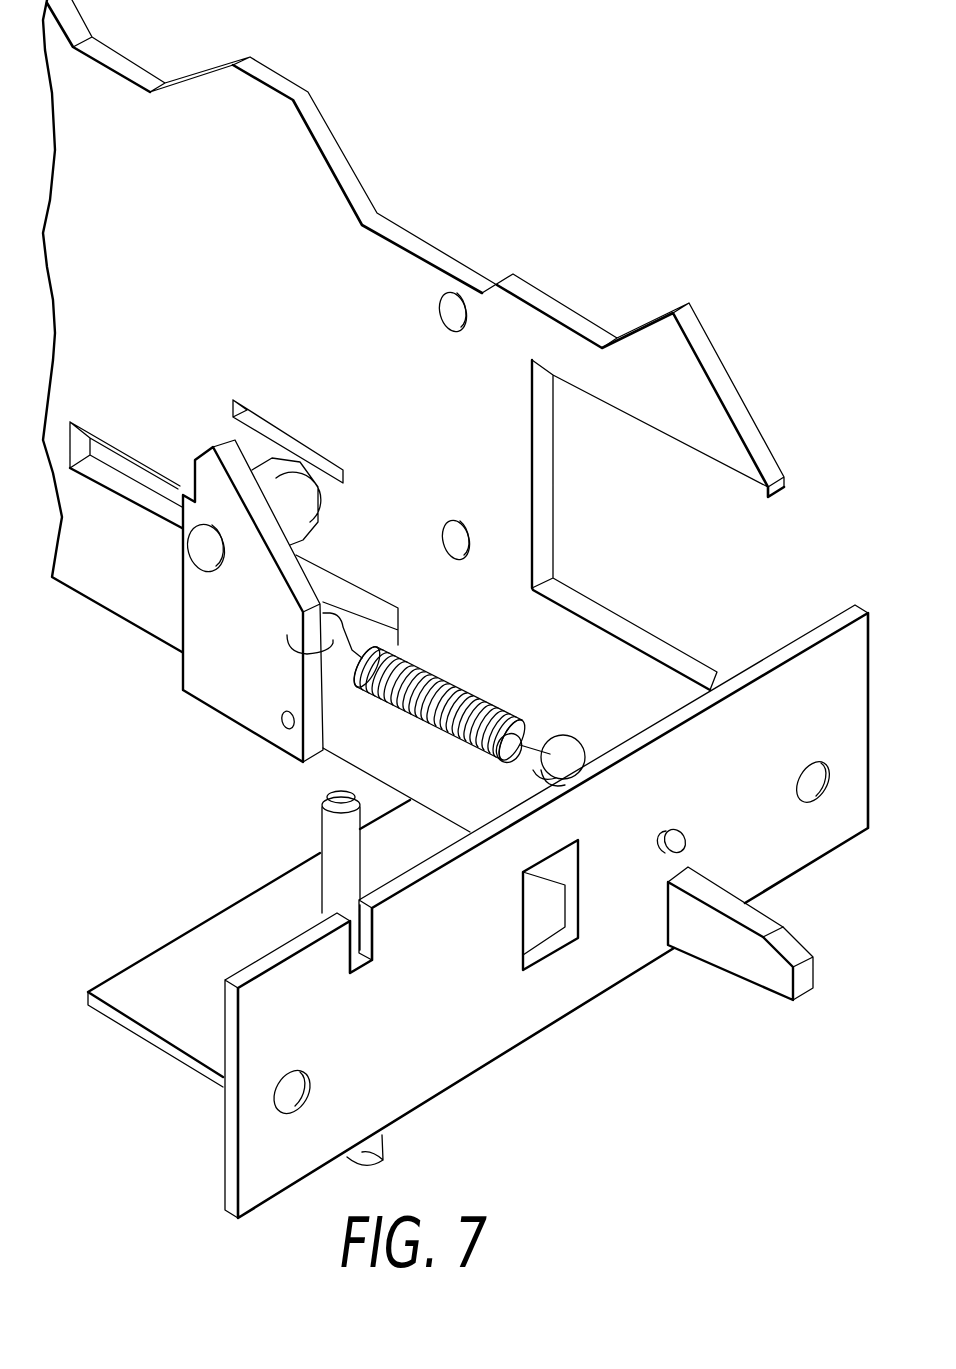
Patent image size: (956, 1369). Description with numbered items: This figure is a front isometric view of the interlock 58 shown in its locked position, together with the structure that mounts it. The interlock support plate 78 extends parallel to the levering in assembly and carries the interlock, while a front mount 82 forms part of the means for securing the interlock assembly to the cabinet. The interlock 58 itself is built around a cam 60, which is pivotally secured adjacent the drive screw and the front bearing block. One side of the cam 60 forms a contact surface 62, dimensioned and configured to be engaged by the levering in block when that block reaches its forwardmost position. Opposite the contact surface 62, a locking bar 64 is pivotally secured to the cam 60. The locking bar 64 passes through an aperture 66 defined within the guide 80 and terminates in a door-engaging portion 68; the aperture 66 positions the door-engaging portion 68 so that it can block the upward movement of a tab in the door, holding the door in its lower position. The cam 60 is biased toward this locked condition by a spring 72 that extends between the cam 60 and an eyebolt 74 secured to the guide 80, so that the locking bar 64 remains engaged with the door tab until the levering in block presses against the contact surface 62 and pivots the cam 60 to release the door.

The interlock 58 is at (218, 735).
The cam 60 is at (253, 657).
The contact surface 62 is at (193, 475).
The locking bar 64 is at (421, 775).
The aperture 66 is at (740, 927).
The door-engaging portion 68 is at (790, 983).
The spring 72 is at (453, 688).
The eyebolt 74 is at (561, 750).
The interlock support plate 78 is at (291, 298).
The guide 80 is at (409, 1048).
The front mount 82 is at (197, 1002).